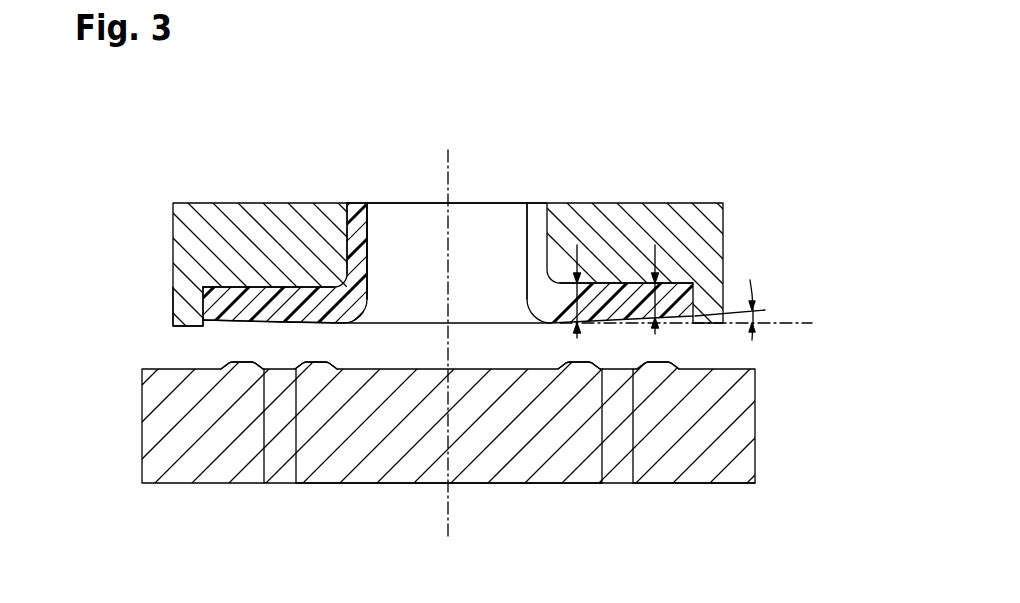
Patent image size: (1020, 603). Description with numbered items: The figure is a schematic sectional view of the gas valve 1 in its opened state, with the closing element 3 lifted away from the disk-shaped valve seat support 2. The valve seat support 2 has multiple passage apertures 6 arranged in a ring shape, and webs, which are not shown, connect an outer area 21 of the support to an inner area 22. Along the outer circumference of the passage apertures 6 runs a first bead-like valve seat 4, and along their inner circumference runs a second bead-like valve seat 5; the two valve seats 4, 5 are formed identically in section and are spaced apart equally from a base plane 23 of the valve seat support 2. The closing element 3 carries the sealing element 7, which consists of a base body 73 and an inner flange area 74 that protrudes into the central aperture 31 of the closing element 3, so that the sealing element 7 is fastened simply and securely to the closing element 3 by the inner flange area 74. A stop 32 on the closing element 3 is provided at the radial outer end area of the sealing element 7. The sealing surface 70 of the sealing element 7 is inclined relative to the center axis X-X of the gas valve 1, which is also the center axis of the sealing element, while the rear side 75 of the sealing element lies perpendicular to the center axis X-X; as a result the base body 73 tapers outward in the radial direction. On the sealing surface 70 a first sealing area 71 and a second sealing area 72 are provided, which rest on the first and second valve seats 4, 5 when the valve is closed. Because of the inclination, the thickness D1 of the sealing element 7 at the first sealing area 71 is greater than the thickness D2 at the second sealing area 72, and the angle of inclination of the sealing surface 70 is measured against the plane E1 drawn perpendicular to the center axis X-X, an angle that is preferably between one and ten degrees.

The gas valve 1 is at (158, 177).
The valve seat support 2 is at (127, 456).
The closing element 3 is at (188, 243).
The central aperture 31 is at (483, 218).
The stop 32 is at (188, 307).
The sealing element 7 is at (236, 268).
The first sealing area 71 is at (233, 327).
The second sealing area 72 is at (300, 340).
The base body 73 is at (278, 369).
The inner flange area 74 is at (358, 220).
The rear side 75 is at (629, 278).
The first valve seat 4 is at (242, 369).
The second valve seat 5 is at (317, 369).
The passage apertures 6 is at (278, 475).
The sealing surface 70 is at (321, 369).
The outer area 21 is at (703, 470).
The inner area 22 is at (520, 470).
The base plane 23 is at (718, 367).
The thickness of sealing element on first sealing area D1 is at (577, 300).
The thickness of second sealing area D2 is at (656, 300).
The reference plane E1 is at (808, 320).
The center axis X is at (447, 339).